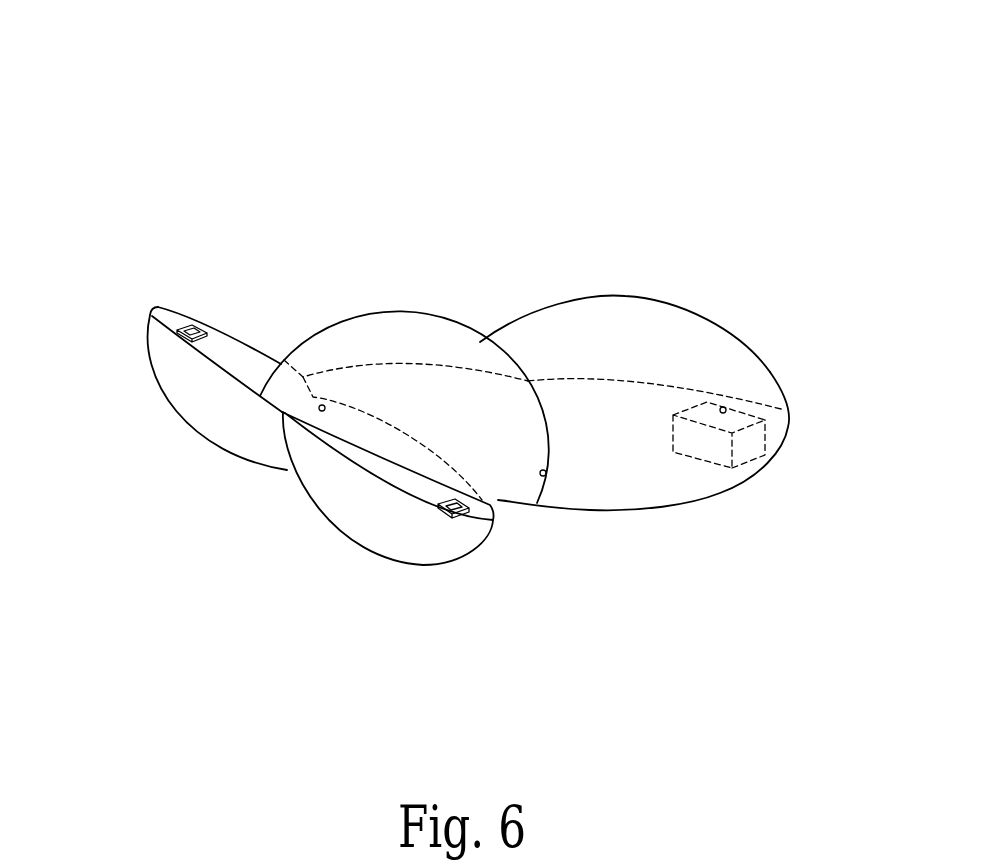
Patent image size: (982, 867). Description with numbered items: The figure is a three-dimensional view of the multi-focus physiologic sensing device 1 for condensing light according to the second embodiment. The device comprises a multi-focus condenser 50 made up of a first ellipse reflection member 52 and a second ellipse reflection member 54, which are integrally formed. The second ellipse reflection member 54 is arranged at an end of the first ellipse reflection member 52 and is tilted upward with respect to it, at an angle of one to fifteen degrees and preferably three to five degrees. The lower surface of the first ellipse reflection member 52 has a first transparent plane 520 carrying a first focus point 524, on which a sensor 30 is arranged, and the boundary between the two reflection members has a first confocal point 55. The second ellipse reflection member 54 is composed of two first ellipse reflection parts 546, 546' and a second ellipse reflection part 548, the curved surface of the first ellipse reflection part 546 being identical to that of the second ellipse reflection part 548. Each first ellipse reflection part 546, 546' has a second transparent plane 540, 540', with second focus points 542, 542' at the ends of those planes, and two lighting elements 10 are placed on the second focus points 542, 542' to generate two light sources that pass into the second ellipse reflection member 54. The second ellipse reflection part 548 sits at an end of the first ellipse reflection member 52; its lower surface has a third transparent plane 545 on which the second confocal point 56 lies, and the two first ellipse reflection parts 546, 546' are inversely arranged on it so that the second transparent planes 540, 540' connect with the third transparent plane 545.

The multi-focus physiologic sensing device 1 is at (348, 115).
The lighting element 10 is at (188, 323).
The sensor 30 is at (750, 443).
The multi-focus condenser 50 is at (757, 295).
The first ellipse reflection member 52 is at (585, 278).
The first transparent plane 520 is at (667, 504).
The first focus point 524 is at (727, 407).
The second ellipse reflection member 54 is at (332, 315).
The third transparent plane 545 is at (420, 375).
The first ellipse reflection part 546 is at (196, 407).
The first ellipse reflection part 546' is at (388, 519).
The second ellipse reflection part 548 is at (442, 325).
The second transparent plane 540 is at (194, 375).
The second transparent plane 540' is at (388, 519).
The second focus point 542 is at (143, 339).
The second focus point 542' is at (487, 550).
The first confocal point 55 is at (549, 472).
The second confocal point 56 is at (326, 404).